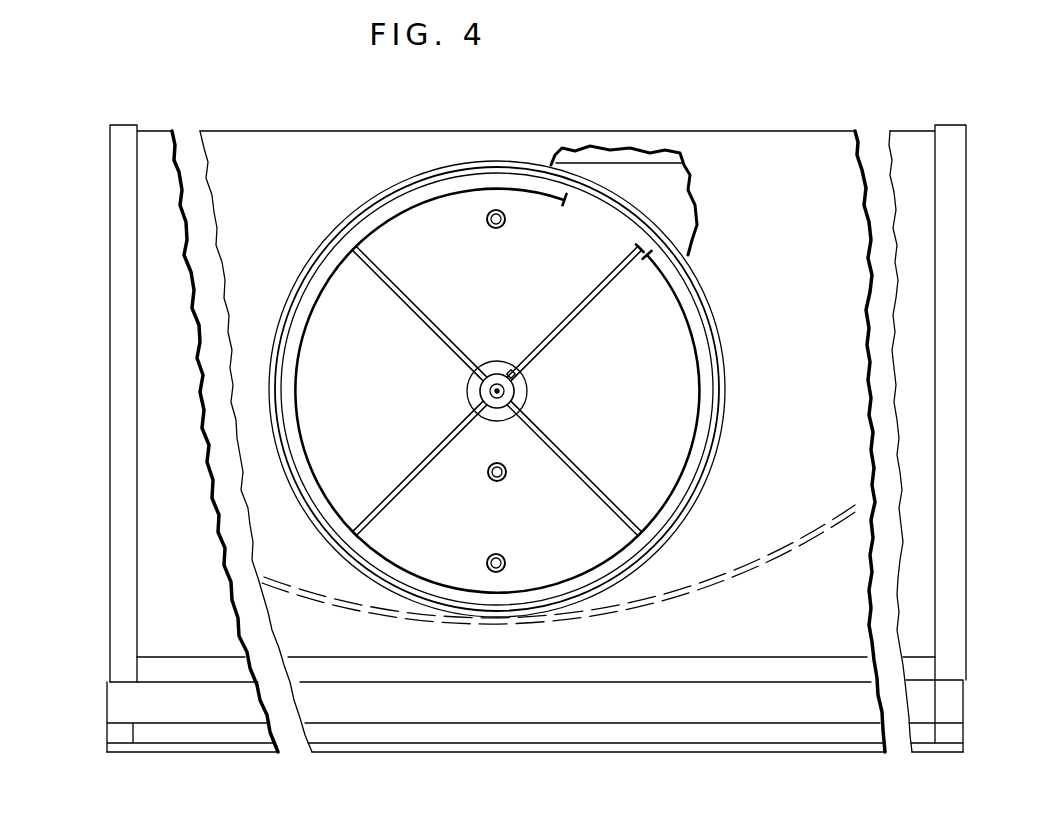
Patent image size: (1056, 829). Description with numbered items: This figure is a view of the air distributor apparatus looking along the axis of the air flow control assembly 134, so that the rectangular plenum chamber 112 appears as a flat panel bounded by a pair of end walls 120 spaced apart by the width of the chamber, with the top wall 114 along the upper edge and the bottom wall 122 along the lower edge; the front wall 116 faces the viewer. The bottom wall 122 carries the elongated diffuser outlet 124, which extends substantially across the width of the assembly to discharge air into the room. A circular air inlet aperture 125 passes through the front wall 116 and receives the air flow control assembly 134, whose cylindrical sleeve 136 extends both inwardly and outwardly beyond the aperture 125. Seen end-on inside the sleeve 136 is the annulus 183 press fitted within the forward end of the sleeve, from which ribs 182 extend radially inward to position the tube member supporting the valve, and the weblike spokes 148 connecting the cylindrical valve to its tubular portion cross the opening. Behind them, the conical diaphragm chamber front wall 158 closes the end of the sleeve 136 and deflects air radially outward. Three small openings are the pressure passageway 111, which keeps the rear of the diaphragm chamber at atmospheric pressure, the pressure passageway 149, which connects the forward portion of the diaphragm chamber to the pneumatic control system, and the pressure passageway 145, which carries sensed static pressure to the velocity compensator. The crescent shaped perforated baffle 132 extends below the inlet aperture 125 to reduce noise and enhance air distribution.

The pressure passageway 111 is at (505, 224).
The air diffuser plenum chamber 112 is at (755, 128).
The top wall 114 is at (508, 128).
The front wall 116 is at (289, 160).
The end walls 120 is at (128, 636).
The bottom wall 122 is at (917, 677).
The diffuser outlet 124 is at (851, 752).
The air inlet aperture 125 is at (712, 302).
The perforated baffle 132 is at (770, 566).
The air flow control assembly 134 is at (700, 440).
The cylindrical sleeve 136 is at (722, 351).
The pressure passageway 145 is at (507, 556).
The weblike spokes 148 is at (568, 336).
The pressure passageway 149 is at (487, 476).
The diaphragm chamber front wall 158 is at (630, 446).
The ribs 182 is at (508, 370).
The annulus 183 is at (300, 442).